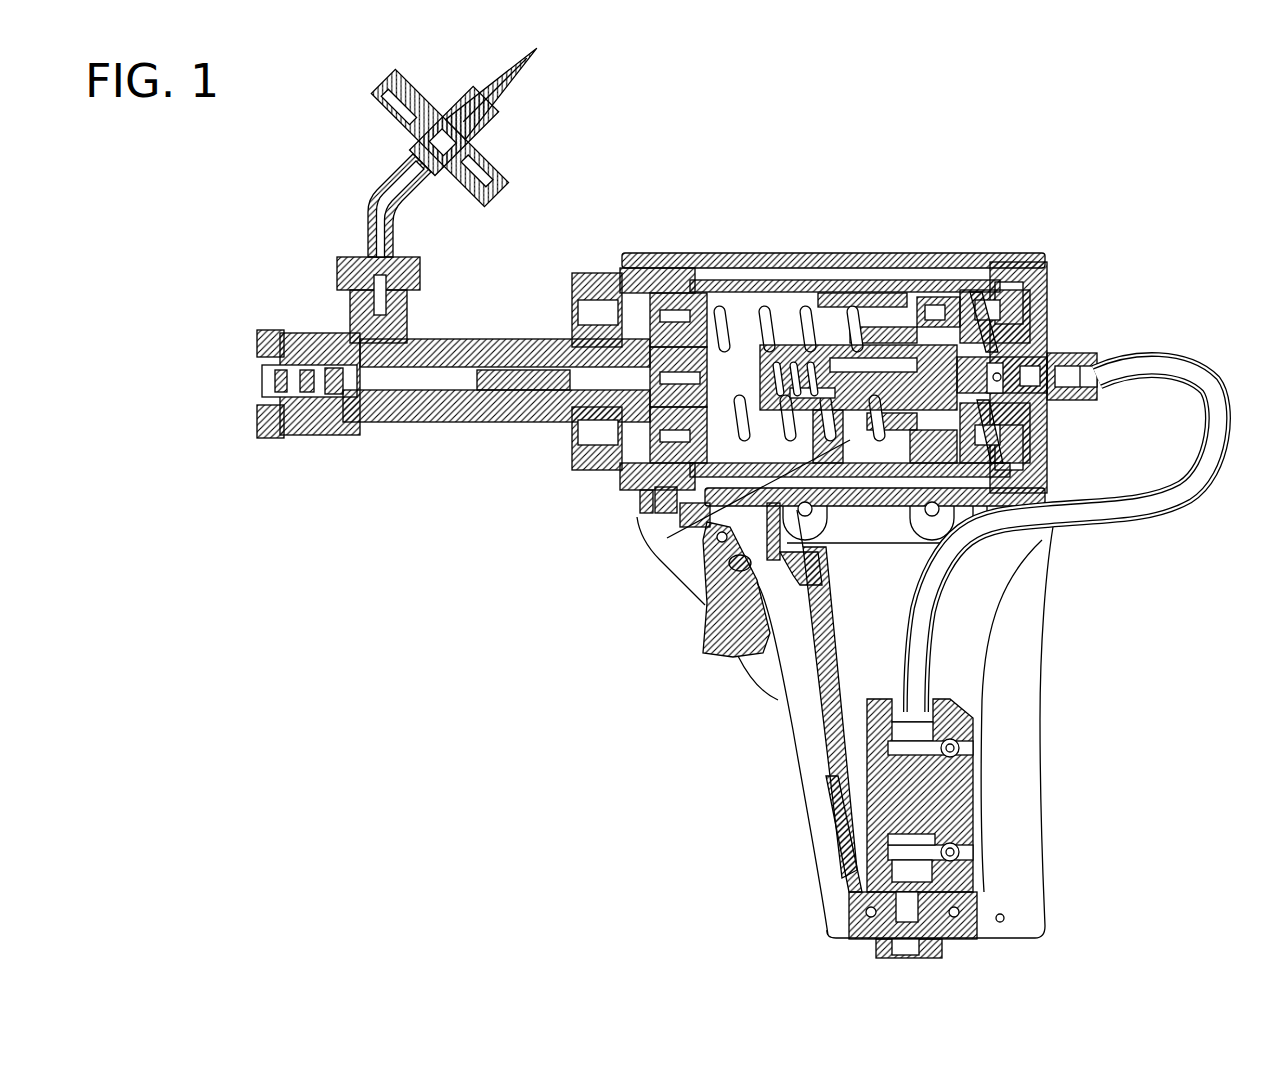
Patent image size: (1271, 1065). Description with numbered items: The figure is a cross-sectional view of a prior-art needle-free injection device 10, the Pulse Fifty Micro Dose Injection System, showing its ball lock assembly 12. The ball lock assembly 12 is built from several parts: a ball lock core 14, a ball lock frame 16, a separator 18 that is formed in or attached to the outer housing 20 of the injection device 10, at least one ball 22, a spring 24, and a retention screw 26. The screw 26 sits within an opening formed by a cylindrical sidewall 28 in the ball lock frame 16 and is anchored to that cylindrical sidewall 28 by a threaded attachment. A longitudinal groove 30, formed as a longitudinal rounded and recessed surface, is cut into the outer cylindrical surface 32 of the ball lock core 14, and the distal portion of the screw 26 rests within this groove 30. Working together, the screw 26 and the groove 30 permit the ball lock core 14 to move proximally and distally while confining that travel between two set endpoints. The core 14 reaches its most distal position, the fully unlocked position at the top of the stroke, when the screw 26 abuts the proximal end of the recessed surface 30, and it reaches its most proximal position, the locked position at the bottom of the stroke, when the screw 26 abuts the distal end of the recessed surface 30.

The injection device 10 is at (1078, 178).
The ball lock assembly 12 is at (866, 385).
The ball lock core 14 is at (860, 385).
The ball lock frame 16 is at (905, 345).
The separator 18 is at (930, 340).
The outer housing 20 is at (1040, 272).
The ball 22 is at (1000, 430).
The spring 24 is at (800, 340).
The retention screw 26 is at (865, 385).
The cylindrical sidewall 28 is at (862, 385).
The longitudinal groove 30 is at (858, 380).
The outer cylindrical surface 32 is at (667, 538).